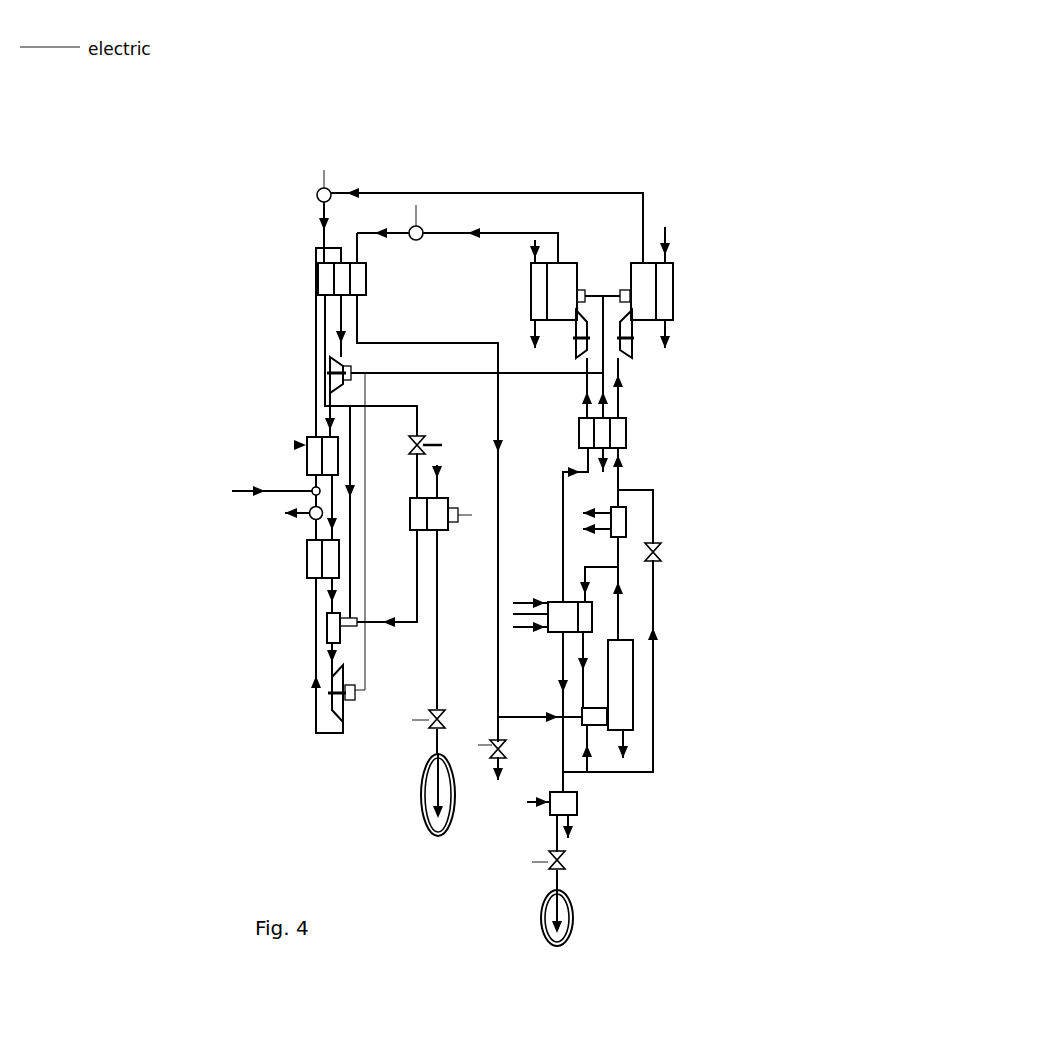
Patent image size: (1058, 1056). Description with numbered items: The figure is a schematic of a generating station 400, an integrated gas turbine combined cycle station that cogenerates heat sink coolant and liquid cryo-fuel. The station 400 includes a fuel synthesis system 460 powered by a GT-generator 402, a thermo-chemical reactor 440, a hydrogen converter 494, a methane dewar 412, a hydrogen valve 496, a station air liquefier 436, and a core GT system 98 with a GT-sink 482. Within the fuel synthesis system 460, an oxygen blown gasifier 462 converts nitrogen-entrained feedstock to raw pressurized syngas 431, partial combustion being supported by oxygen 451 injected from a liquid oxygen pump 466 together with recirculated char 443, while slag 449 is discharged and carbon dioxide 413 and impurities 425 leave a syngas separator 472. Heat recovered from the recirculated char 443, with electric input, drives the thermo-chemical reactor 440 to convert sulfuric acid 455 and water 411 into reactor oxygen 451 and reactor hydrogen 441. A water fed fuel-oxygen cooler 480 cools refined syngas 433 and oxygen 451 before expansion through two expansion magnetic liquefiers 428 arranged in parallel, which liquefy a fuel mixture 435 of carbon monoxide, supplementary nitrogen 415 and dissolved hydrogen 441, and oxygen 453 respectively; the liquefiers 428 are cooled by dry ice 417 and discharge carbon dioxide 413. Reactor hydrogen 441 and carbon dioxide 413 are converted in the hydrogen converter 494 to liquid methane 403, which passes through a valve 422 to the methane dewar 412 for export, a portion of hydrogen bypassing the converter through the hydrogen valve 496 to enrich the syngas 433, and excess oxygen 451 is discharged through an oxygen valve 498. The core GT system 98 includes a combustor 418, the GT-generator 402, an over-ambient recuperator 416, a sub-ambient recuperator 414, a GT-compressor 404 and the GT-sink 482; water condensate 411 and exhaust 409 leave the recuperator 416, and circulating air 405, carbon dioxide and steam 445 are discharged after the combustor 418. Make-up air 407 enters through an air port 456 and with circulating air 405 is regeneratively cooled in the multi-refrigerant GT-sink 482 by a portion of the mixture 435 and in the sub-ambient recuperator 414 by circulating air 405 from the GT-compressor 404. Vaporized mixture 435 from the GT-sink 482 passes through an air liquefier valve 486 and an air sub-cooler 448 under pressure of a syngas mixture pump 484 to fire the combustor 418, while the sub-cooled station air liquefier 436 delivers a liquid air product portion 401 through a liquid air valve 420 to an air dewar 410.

The generating station 400 is at (430, 161).
The liquid air product portion 401 is at (432, 810).
The GT-generator 402 is at (335, 702).
The liquid methane 403 is at (545, 926).
The GT-compressor 404 is at (340, 383).
The circulating air 405 is at (337, 345).
The make-up air 407 is at (455, 463).
The exhaust 409 is at (284, 514).
The air dewar 410 is at (433, 832).
The water condensate 411 is at (616, 465).
The methane dewar 412 is at (572, 915).
The carbon dioxide 413 is at (530, 338).
The sub-ambient recuperator 414 is at (306, 455).
The supplementary nitrogen 415 is at (592, 752).
The over-ambient recuperator 416 is at (315, 567).
The dry ice 417 is at (660, 244).
The combustor 418 is at (330, 623).
The liquid air valve 420 is at (428, 722).
The valve 422 is at (548, 857).
The impurities 425 is at (585, 530).
The expansion magnetic liquefiers 428 is at (568, 276).
The raw pressurized syngas 431 is at (625, 590).
The refined syngas 433 is at (622, 378).
The fuel mixture 435 is at (349, 197).
The station air liquefier 436 is at (445, 530).
The thermo-chemical reactor 440 is at (560, 633).
The reactor hydrogen 441 is at (660, 633).
The recirculated char 443 is at (582, 582).
The steam 445 is at (328, 655).
The air sub-cooler 448 is at (411, 530).
The slag 449 is at (630, 748).
The reactor oxygen 451 is at (578, 470).
The oxygen 453 is at (385, 237).
The sulfuric acid 455 is at (513, 603).
The air port 456 is at (311, 489).
The fuel synthesis system 460 is at (593, 495).
The oxygen blown gasifier 462 is at (627, 680).
The liquid oxygen pump 466 is at (423, 229).
The syngas separator 472 is at (628, 517).
The water fed fuel-oxygen cooler 480 is at (590, 428).
The multi-refrigerant GT-sink 482 is at (336, 279).
The syngas mixture pump 484 is at (317, 195).
The air liquefier valve 486 is at (424, 440).
The hydrogen converter 494 is at (565, 803).
The hydrogen valve 496 is at (660, 556).
The oxygen valve 498 is at (492, 742).
The core GT system 98 is at (305, 530).